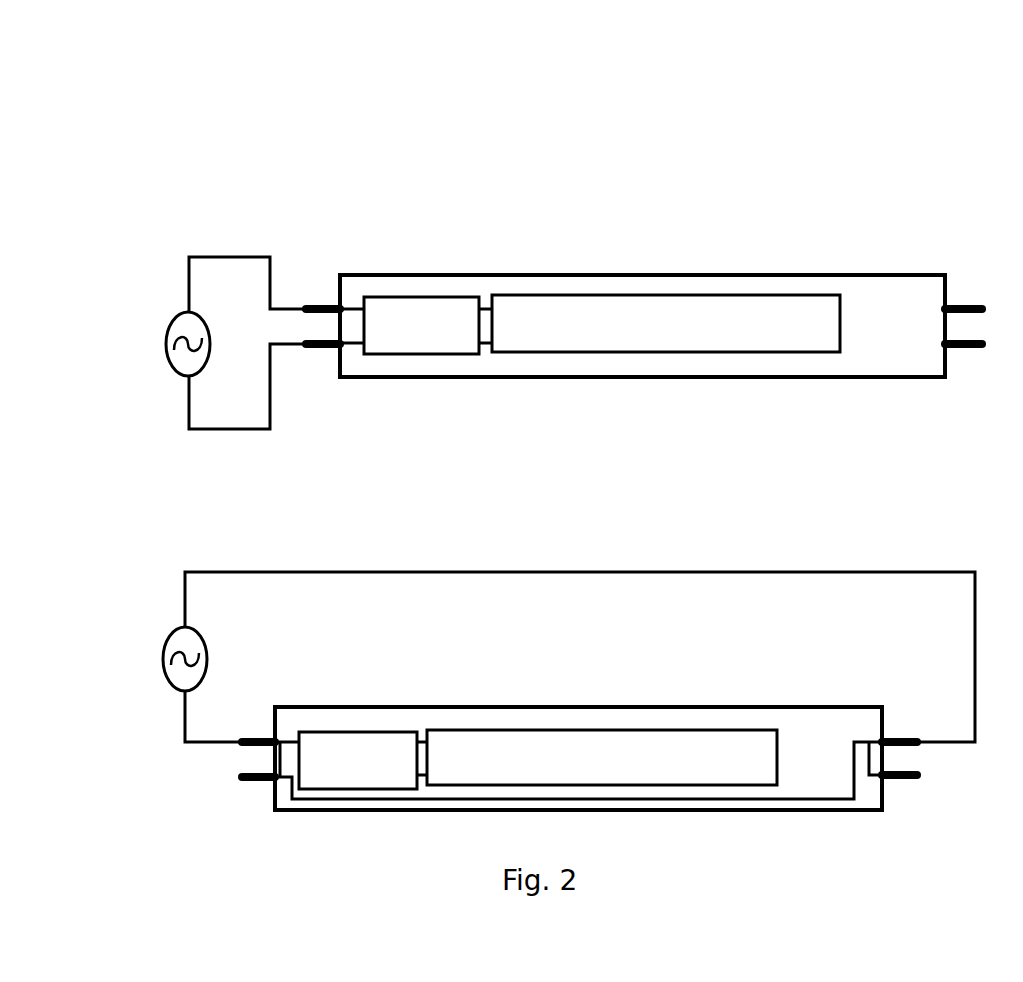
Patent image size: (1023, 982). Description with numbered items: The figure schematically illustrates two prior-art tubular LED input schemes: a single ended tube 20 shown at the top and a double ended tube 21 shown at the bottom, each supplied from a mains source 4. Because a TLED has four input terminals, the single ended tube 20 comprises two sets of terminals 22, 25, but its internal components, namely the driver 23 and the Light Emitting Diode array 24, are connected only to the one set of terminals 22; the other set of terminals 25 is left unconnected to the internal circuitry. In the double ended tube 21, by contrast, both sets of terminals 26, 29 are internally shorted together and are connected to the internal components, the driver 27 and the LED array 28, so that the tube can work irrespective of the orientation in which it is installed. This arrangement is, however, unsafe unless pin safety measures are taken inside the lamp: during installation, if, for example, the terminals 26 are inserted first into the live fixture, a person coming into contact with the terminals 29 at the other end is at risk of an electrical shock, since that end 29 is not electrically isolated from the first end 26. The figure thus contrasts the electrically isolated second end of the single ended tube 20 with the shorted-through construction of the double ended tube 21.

The mains power source 4 is at (163, 320).
The single ended tube 20 is at (858, 177).
The double ended tube 21 is at (914, 565).
The first set of terminals 22 is at (318, 295).
The driver 23 is at (412, 292).
The LED array 24 is at (608, 293).
The second set of terminals 25 is at (963, 303).
The first set of terminals 26 is at (247, 722).
The driver 27 is at (397, 723).
The LED array 28 is at (551, 720).
The second set of terminals 29 is at (898, 737).